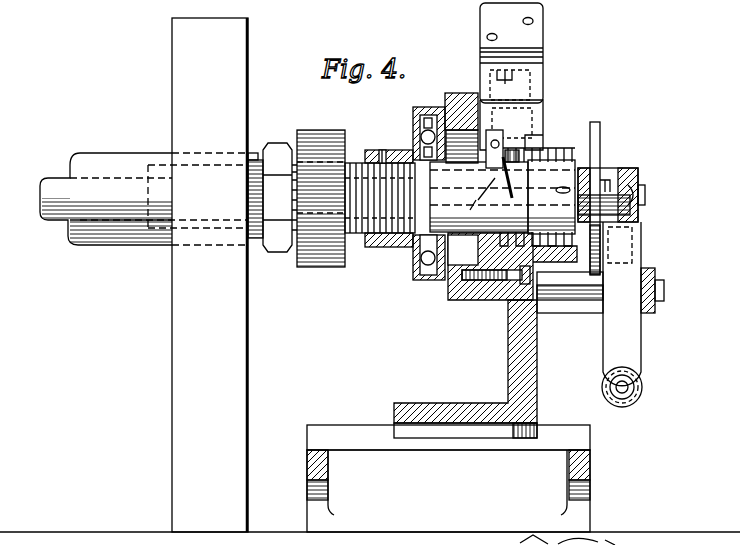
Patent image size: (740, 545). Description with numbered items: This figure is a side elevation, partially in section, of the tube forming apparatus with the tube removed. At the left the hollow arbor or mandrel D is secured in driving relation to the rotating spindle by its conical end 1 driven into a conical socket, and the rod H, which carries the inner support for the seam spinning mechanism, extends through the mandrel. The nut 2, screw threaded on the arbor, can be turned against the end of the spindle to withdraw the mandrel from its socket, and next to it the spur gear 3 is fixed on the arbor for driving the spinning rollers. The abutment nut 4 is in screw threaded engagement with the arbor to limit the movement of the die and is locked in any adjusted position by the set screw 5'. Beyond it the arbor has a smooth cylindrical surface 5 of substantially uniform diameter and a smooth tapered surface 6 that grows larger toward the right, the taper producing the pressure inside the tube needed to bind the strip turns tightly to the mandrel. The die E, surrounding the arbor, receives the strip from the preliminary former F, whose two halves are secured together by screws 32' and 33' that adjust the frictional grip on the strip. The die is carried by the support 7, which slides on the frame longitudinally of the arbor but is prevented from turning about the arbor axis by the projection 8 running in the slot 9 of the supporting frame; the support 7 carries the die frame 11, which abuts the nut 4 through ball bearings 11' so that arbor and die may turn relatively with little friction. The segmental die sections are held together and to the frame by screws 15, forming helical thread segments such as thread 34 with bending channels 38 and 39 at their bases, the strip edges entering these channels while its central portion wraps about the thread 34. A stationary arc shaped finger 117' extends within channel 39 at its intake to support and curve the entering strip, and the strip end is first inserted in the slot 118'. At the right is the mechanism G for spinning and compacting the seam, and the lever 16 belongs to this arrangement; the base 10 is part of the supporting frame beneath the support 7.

The conical end 1 is at (222, 157).
The rod H is at (58, 180).
The nut 2 is at (272, 197).
The spur gear 3 is at (318, 258).
The bending channel 38 is at (380, 228).
The smooth unthreaded surface 5 is at (389, 217).
The set screw 5' is at (376, 141).
The abutment nut 4 is at (405, 148).
The ball bearings 11' is at (434, 175).
The frame 11 is at (489, 183).
The arbor or mandrel D is at (462, 252).
The screws 15 is at (478, 288).
The bending channel 39 is at (447, 283).
The thread segment 34 is at (445, 283).
The arc shaped finger 117' is at (505, 194).
The tapered surface 6 is at (564, 188).
The die E is at (522, 135).
The preliminary former F is at (545, 28).
The screw 33' is at (470, 38).
The screw 32' is at (554, 12).
The slot 118' is at (613, 198).
The mechanism for spinning and compacting the seam G is at (612, 177).
The lever arm 16 is at (600, 314).
The support 7 is at (538, 382).
The projection 8 is at (538, 424).
The slot 9 is at (383, 432).
The base block 10 is at (312, 447).